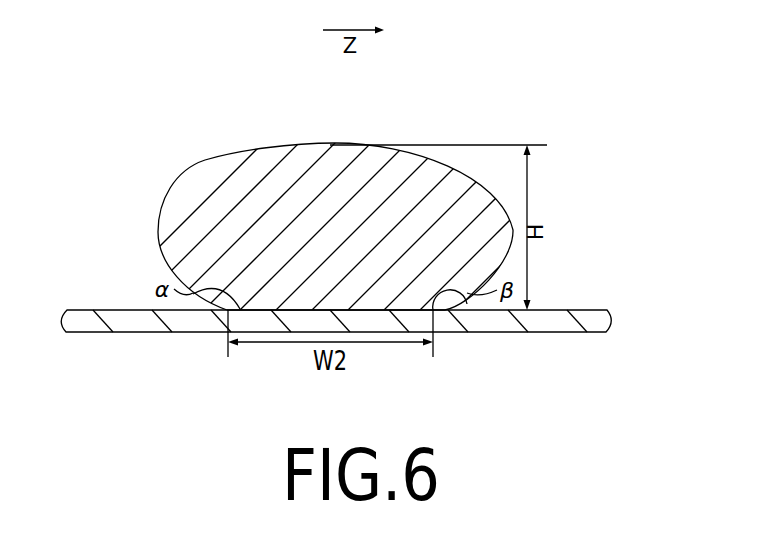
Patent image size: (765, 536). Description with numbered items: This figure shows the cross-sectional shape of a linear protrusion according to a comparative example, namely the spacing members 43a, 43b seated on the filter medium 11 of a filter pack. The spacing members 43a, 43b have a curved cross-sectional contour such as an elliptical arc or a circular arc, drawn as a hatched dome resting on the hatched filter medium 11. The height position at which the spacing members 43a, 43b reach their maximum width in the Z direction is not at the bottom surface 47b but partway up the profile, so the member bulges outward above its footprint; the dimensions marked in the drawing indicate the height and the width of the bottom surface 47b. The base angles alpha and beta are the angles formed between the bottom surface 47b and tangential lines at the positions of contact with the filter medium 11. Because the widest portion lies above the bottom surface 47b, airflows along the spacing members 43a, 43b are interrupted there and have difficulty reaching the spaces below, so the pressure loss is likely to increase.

The spacing member 43a is at (394, 174).
The spacing member 43b is at (482, 117).
The filter medium 11 is at (573, 310).
The bottom surface 47b is at (266, 312).